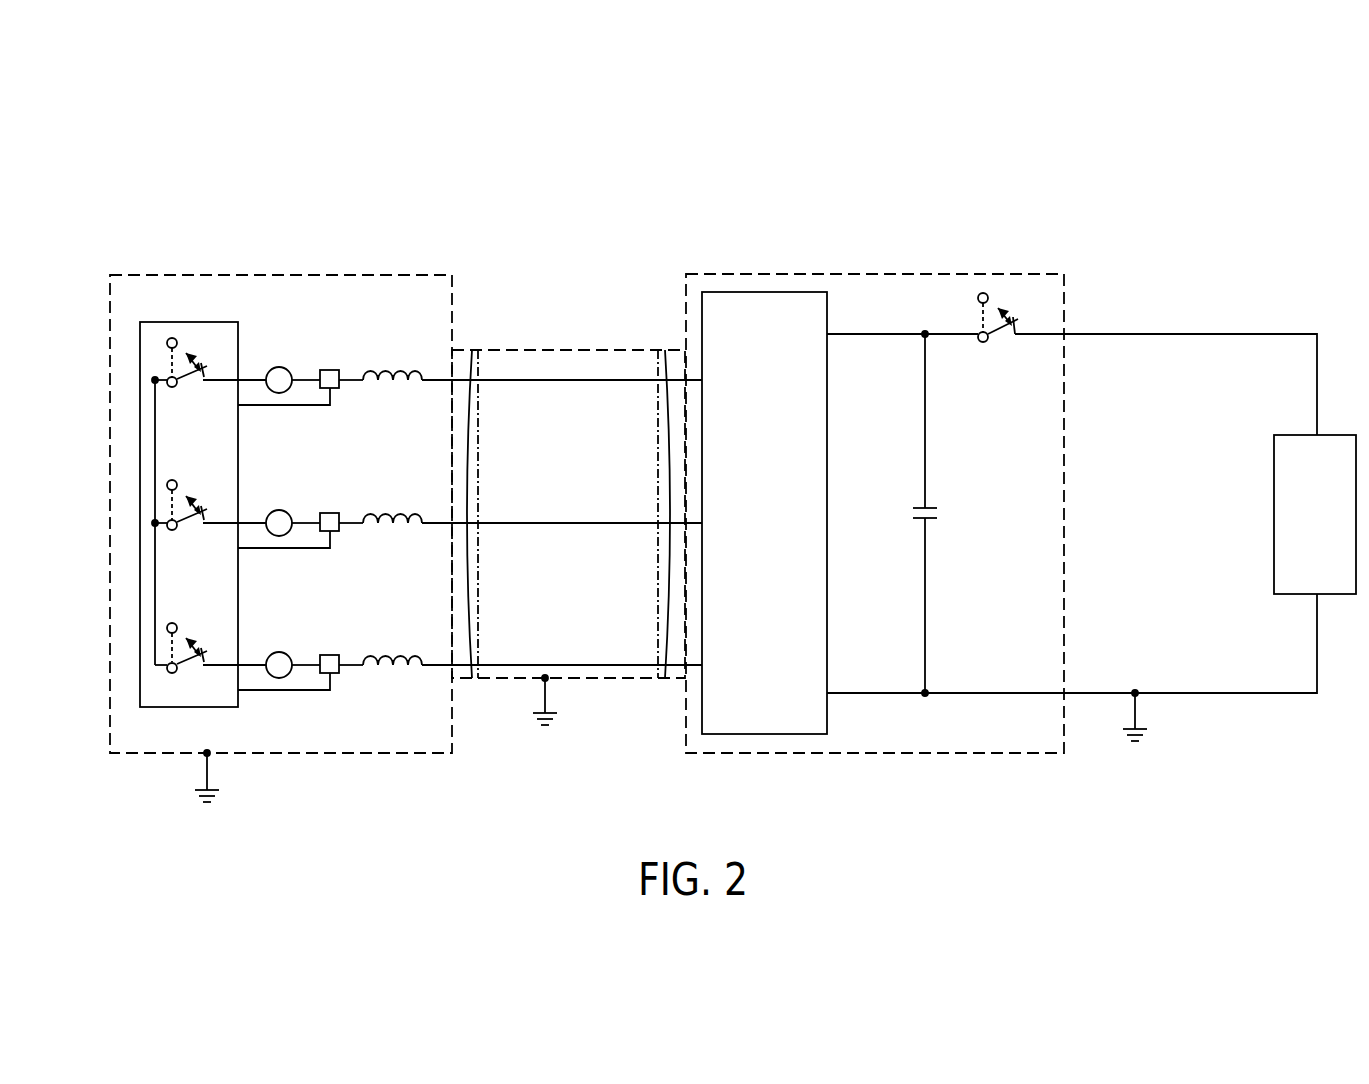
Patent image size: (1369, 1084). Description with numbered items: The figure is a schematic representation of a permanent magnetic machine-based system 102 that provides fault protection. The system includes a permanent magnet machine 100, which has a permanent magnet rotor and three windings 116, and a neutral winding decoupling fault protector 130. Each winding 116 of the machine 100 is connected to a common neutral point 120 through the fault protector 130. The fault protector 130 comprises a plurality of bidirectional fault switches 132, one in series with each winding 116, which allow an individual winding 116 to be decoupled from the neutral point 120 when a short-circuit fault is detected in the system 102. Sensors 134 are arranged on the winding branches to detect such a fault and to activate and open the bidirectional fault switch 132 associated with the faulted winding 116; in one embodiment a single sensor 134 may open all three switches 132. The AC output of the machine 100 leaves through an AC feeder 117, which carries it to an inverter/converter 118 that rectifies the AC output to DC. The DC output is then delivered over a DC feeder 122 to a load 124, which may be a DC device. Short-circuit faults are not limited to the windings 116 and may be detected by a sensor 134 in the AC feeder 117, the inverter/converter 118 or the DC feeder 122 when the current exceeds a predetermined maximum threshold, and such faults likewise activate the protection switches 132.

The permanent magnet machine 100 is at (177, 275).
The permanent magnetic machine-based system 102 is at (614, 168).
The winding 116 is at (265, 500).
The AC feeder 117 is at (634, 678).
The inverter/converter 118 is at (856, 754).
The neutral point 120 is at (155, 571).
The DC feeder 122 is at (1120, 333).
The load 124 is at (1274, 515).
The neutral winding decoupling fault protector 130 is at (140, 462).
The bidirectional fault switch 132 is at (190, 386).
The sensor 134 is at (334, 370).